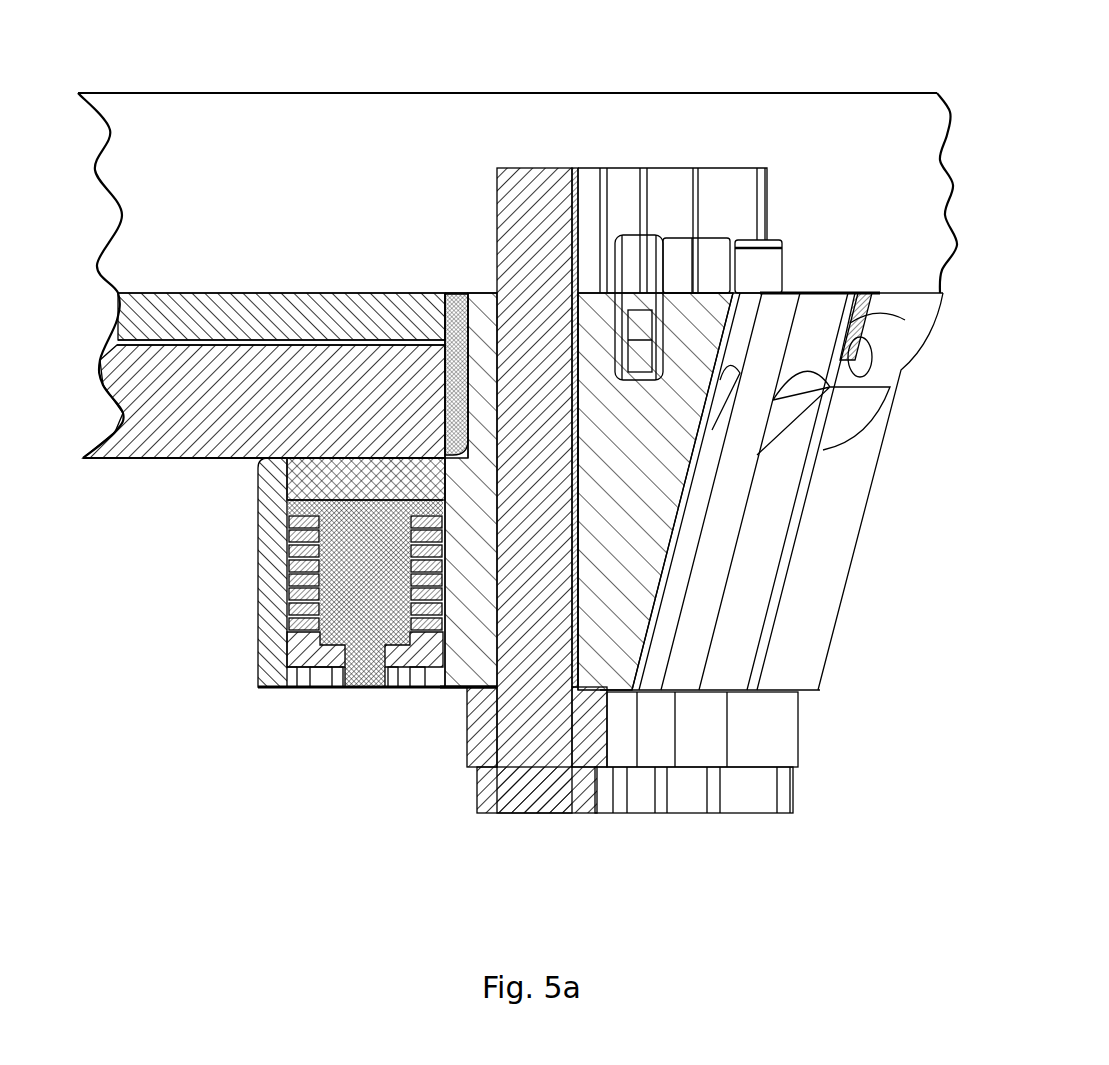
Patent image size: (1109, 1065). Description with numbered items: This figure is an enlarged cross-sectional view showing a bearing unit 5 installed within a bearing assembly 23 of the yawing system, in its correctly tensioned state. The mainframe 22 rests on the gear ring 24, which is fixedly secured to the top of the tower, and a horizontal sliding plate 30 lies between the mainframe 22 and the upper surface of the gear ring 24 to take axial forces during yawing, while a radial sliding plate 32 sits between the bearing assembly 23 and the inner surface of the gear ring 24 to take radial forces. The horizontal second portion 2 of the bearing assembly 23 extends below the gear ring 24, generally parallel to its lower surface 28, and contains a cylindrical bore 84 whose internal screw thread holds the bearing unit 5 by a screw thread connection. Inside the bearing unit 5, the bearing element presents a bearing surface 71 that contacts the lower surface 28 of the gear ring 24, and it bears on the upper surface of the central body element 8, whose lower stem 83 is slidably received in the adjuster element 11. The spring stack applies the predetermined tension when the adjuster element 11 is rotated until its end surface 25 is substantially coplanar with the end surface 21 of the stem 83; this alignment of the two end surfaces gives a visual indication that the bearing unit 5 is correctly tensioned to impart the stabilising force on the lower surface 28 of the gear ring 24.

The second portion 2 is at (258, 687).
The bearing unit 5 is at (401, 714).
The body element 8 is at (358, 593).
The adjuster element 11 is at (298, 645).
The end surface 21 is at (366, 690).
The mainframe 22 is at (671, 135).
The bearing assembly 23 is at (456, 700).
The gear ring 24 is at (115, 413).
The end surface 25 is at (325, 690).
The lower circumferential bearing surface 28 is at (183, 459).
The horizontal sliding plate 30 is at (330, 318).
The radial sliding plate 32 is at (458, 320).
The bearing surface 71 is at (313, 462).
The stem 83 is at (330, 670).
The cylindrical bore 84 is at (296, 560).